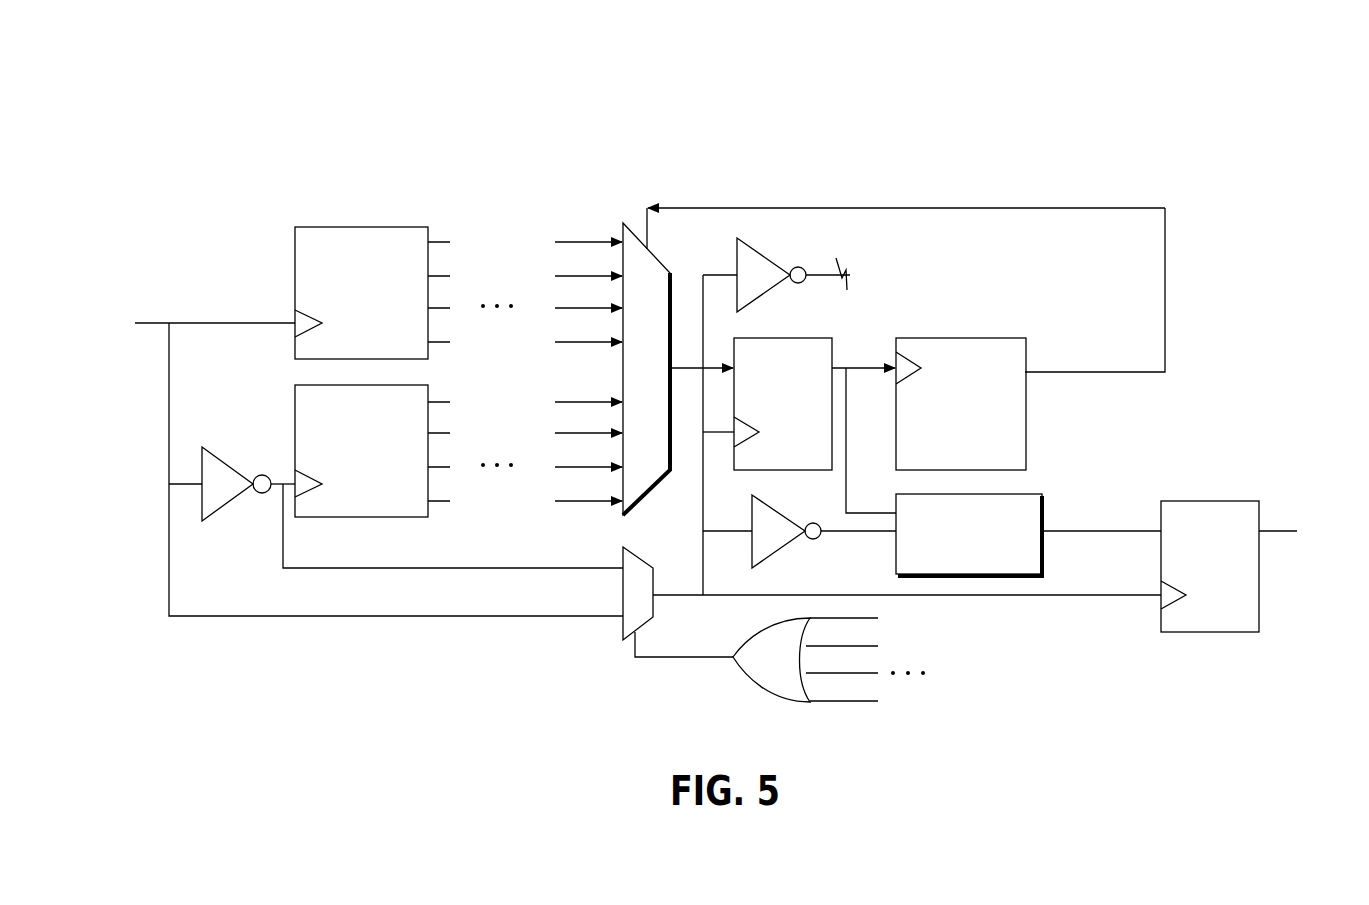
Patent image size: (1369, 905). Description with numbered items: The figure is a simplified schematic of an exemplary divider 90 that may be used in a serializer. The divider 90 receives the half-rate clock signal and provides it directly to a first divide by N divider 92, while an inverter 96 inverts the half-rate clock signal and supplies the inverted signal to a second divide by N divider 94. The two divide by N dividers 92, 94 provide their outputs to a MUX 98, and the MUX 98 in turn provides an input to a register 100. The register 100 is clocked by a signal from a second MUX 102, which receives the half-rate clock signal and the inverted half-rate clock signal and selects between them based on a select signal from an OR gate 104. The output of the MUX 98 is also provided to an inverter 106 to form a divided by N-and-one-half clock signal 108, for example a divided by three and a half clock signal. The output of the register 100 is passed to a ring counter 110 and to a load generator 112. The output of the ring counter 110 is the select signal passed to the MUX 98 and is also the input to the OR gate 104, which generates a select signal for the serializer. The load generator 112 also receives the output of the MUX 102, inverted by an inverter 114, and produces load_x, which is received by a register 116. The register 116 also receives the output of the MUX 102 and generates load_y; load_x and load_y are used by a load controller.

The divider 90 is at (1250, 180).
The first divide by N divider 92 is at (361, 227).
The second divide by N divider 94 is at (365, 517).
The inverter 96 is at (230, 456).
The MUX 98 is at (650, 254).
The register 100 is at (786, 338).
The MUX 102 is at (641, 553).
The OR gate 104 is at (757, 690).
The inverter 106 is at (774, 256).
The divided by N.5 clock signal 108 is at (845, 263).
The ring counter 110 is at (1032, 396).
The load generator 112 is at (1048, 494).
The inverter 114 is at (780, 553).
The register 116 is at (1215, 501).